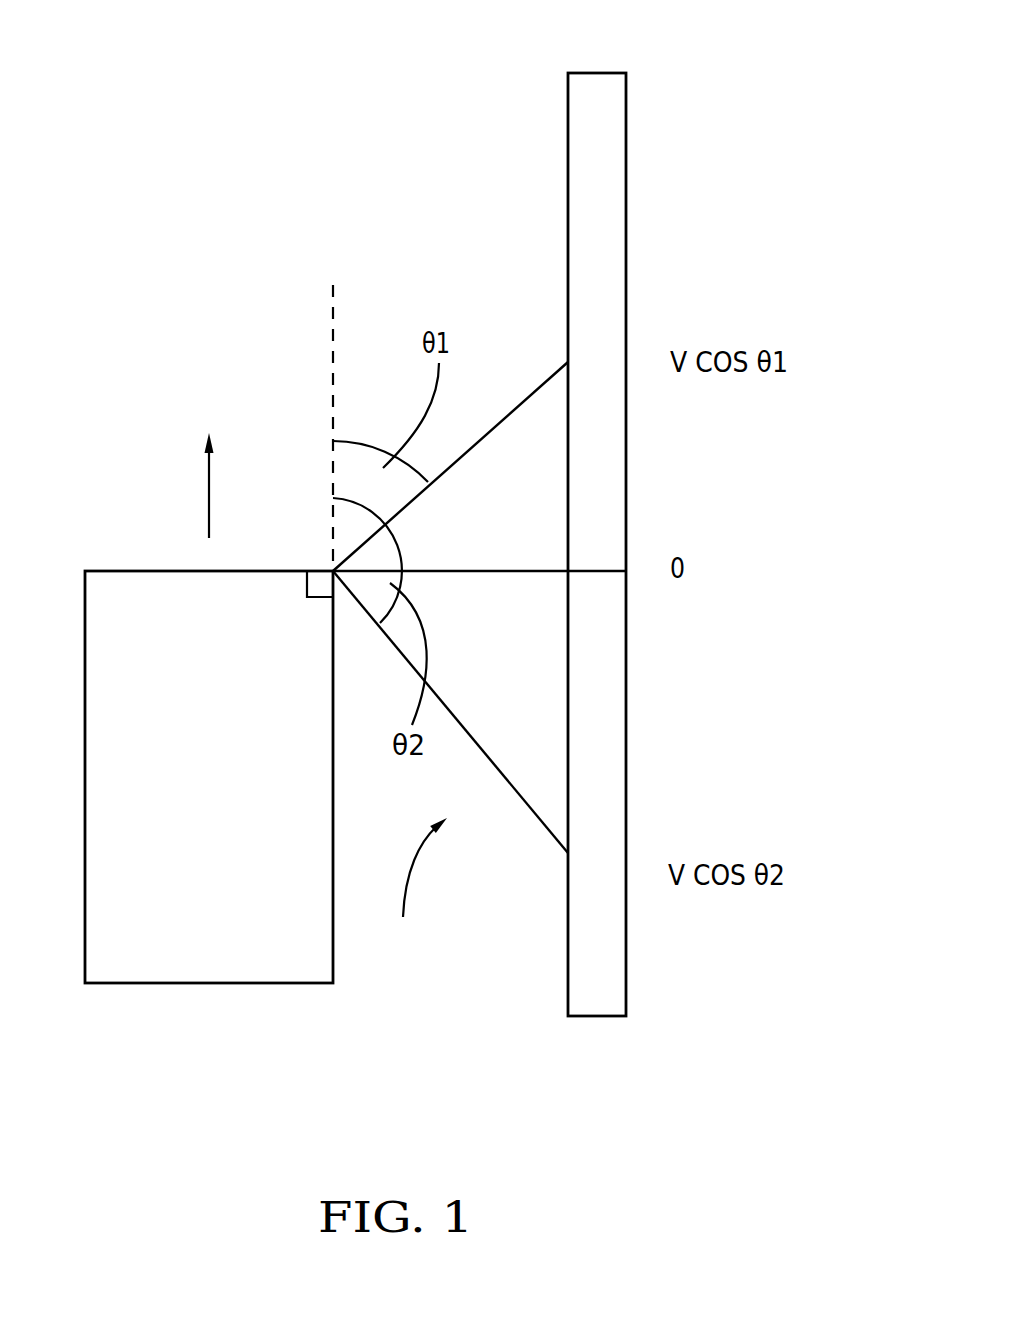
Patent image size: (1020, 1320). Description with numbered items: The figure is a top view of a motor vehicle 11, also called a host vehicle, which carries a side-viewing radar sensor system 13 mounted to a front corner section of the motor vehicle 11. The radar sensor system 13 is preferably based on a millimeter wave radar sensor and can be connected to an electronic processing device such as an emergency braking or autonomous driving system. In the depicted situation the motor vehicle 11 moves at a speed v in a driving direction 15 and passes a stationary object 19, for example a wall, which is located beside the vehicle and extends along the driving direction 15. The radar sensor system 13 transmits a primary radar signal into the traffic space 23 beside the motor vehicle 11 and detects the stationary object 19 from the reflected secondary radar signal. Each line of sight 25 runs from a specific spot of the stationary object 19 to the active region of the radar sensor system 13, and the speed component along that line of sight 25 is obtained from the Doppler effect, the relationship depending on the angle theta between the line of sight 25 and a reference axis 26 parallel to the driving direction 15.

The motor vehicle 11 is at (225, 778).
The radar sensor system 13 is at (315, 577).
The driving direction 15 is at (208, 467).
The stationary object 19 is at (615, 132).
The traffic space 23 is at (418, 884).
The line of sight 25 is at (543, 385).
The reference axis 26 is at (333, 333).